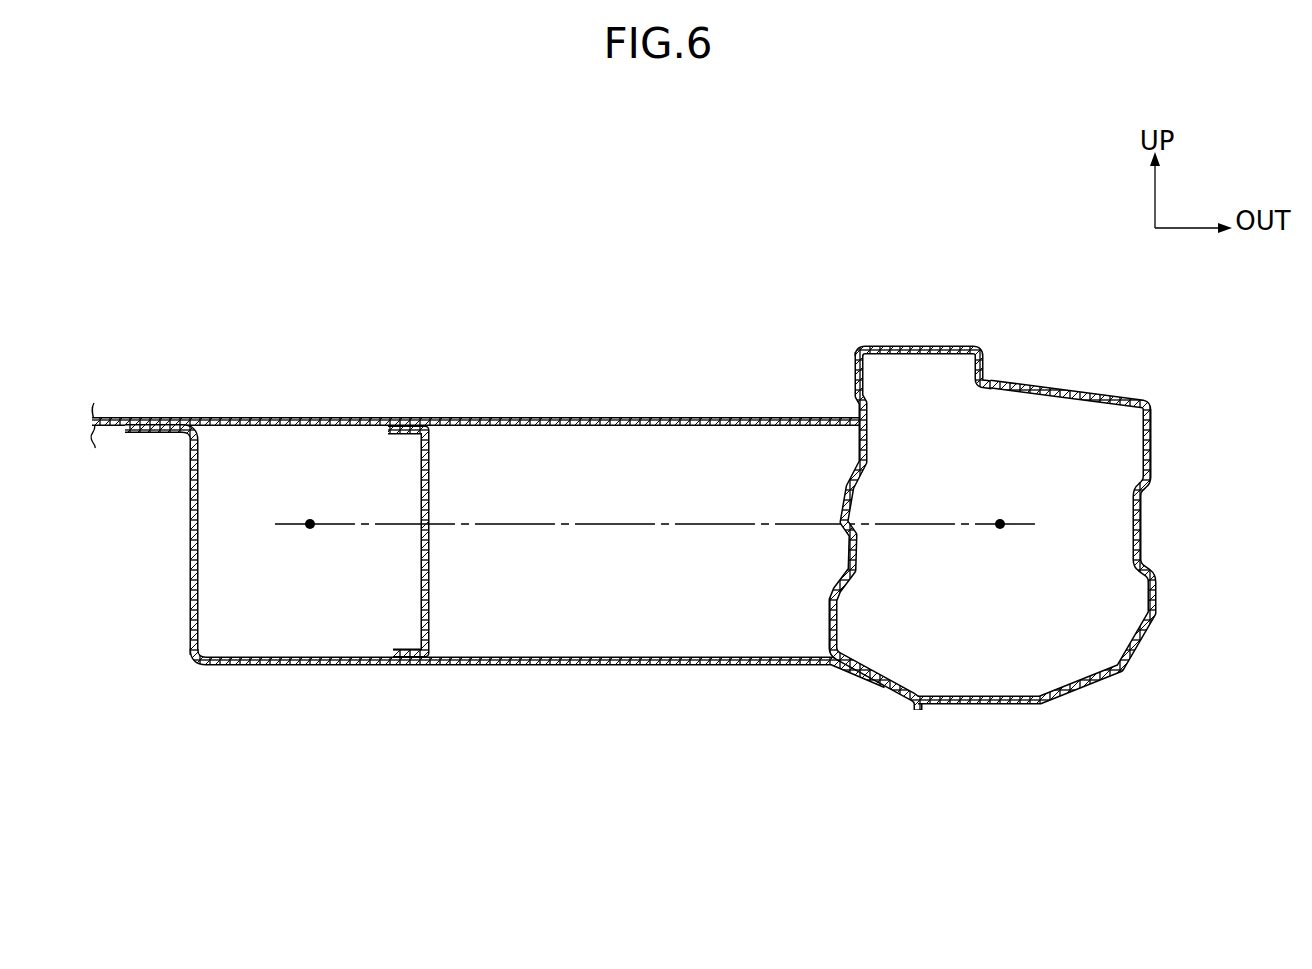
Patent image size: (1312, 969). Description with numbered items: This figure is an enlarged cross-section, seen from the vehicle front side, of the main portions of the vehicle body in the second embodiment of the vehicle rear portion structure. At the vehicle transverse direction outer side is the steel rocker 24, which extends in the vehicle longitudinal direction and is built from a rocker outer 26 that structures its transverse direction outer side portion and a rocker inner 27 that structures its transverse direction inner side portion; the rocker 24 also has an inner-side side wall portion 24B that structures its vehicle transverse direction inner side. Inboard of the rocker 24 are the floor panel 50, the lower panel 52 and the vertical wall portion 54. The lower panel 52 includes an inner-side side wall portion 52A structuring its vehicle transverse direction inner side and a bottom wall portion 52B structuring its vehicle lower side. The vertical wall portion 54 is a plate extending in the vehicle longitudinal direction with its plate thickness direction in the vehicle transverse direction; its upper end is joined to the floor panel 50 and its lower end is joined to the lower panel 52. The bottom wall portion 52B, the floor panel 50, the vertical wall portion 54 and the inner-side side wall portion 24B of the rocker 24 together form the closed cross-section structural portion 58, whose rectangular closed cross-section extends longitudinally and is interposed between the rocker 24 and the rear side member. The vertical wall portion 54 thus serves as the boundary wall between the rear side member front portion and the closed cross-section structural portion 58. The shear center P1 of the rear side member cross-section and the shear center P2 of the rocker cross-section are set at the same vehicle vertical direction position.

The rocker 24 is at (1031, 477).
The inner-side side wall portion 24B is at (852, 493).
The rocker outer 26 is at (1155, 435).
The rocker inner 27 is at (880, 345).
The floor panel 50 is at (752, 417).
The lower panel 52 is at (493, 617).
The inner-side side wall portion 52A is at (190, 532).
The bottom wall portion 52B is at (578, 665).
The vertical wall portion 54 is at (432, 565).
The closed cross-section structural portion 58 is at (627, 352).
The shear center P1 is at (310, 520).
The shear center P2 is at (1000, 521).